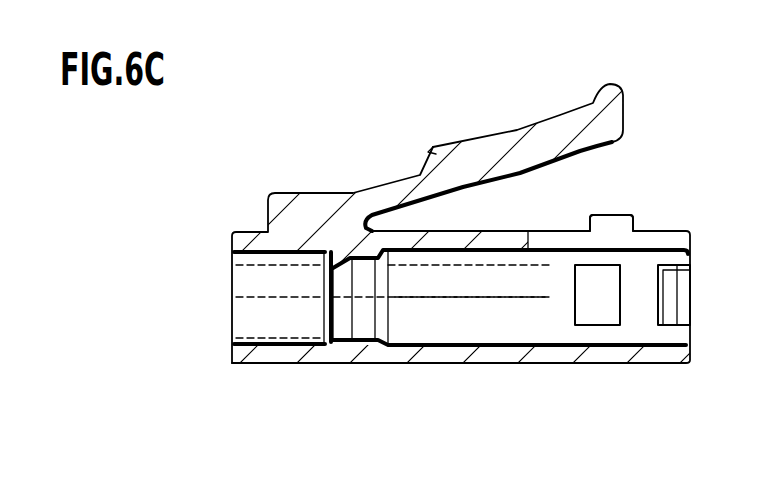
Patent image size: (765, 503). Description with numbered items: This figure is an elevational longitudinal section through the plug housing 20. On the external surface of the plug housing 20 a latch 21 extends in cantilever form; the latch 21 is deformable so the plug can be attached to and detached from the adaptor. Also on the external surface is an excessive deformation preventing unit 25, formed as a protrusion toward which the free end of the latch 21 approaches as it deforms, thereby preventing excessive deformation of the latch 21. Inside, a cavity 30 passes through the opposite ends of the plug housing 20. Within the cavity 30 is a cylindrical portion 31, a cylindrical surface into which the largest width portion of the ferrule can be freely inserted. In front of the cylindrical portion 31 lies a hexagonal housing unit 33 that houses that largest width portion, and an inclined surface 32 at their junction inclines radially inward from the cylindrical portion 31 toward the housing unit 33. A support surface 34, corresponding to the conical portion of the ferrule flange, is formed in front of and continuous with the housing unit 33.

The plug housing 20 is at (655, 174).
The latch 21 is at (545, 125).
The excessive deformation preventing unit 25 is at (613, 212).
The cavity 30 is at (443, 371).
The cylindrical portion 31 is at (471, 367).
The inclined surface 32 is at (391, 344).
The housing unit 33 is at (360, 340).
The support surface 34 is at (340, 333).